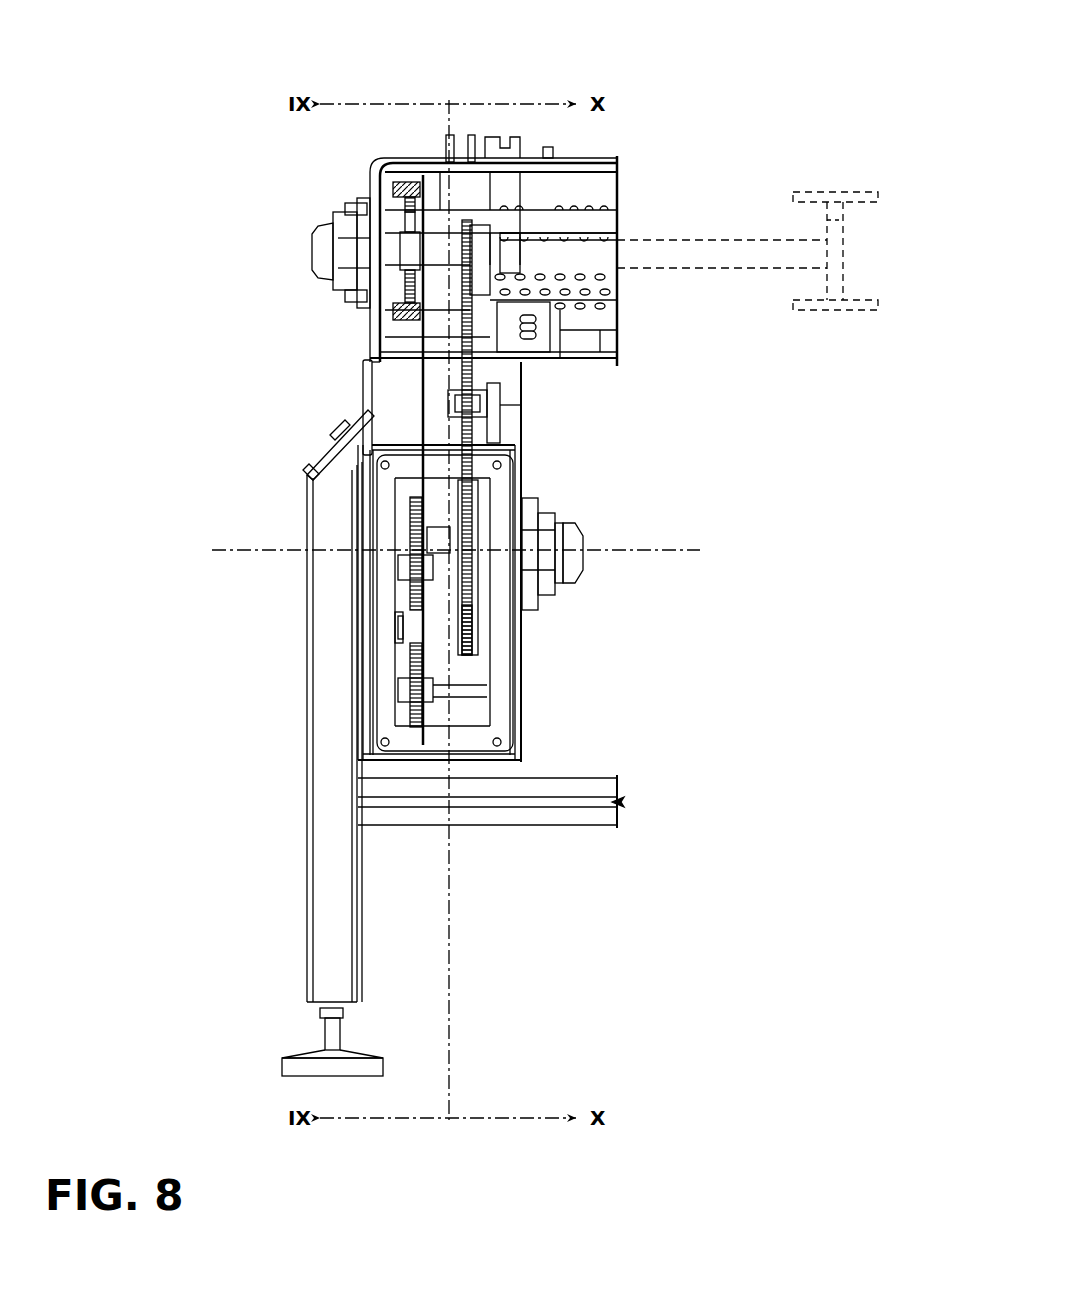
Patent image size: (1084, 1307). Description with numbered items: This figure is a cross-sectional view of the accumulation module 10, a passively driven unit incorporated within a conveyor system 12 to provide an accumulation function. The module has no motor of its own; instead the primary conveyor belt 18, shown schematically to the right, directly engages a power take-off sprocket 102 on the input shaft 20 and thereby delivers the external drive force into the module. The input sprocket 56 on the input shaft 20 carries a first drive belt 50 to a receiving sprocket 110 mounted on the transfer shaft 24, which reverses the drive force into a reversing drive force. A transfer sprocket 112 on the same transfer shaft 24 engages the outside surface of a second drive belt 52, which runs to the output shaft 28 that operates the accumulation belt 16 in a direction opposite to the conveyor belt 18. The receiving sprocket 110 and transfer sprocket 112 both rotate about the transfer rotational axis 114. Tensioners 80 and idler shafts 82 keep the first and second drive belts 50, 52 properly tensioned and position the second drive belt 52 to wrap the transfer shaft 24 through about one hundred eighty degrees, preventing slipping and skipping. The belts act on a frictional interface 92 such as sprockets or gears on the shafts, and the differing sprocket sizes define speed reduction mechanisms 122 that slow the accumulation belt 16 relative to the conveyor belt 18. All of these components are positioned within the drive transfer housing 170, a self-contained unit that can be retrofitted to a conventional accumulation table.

The accumulation module 10 is at (762, 174).
The conveyor system 12 is at (517, 80).
The accumulation belt 16 is at (618, 292).
The conveyor belt 18 is at (848, 185).
The input shaft 20 is at (608, 255).
The transfer shaft 24 is at (452, 545).
The output shaft 28 is at (398, 267).
The first drive belt 50 is at (462, 627).
The second drive belt 52 is at (398, 628).
The input sprocket 56 is at (478, 225).
The tensioner 80 is at (500, 415).
The idler shaft 82 is at (470, 688).
The frictional interface 92 is at (352, 381).
The power take-off sprocket 102 is at (852, 268).
The receiving sprocket 110 is at (468, 508).
The transfer sprocket 112 is at (402, 545).
The transfer rotational axis 114 is at (590, 550).
The speed reduction mechanism 122 is at (352, 588).
The drive transfer housing 170 is at (352, 720).